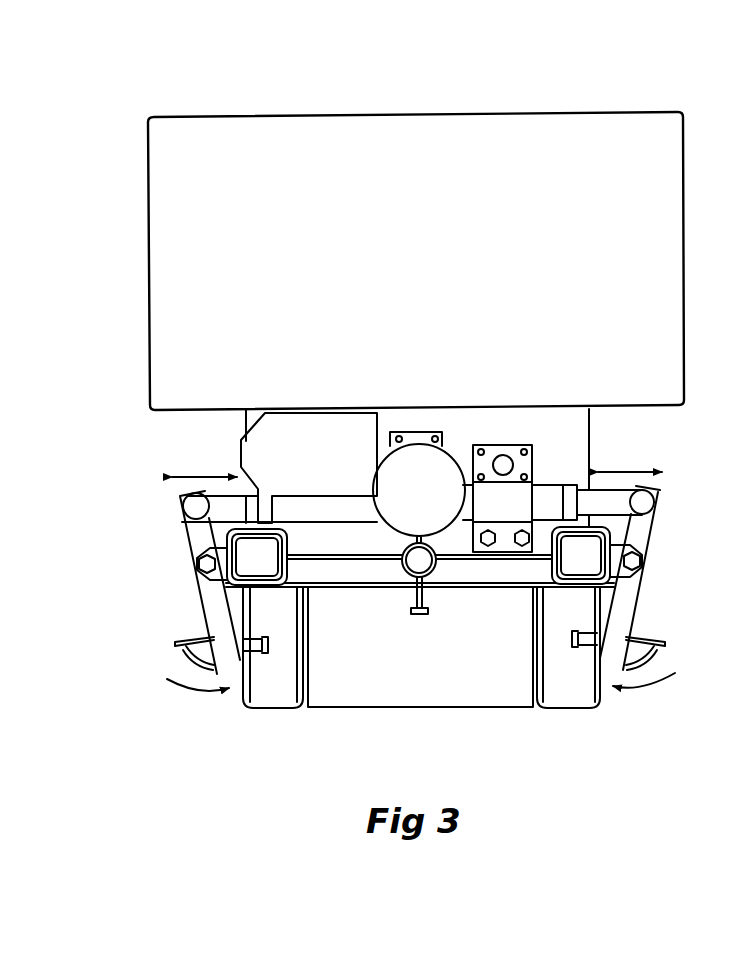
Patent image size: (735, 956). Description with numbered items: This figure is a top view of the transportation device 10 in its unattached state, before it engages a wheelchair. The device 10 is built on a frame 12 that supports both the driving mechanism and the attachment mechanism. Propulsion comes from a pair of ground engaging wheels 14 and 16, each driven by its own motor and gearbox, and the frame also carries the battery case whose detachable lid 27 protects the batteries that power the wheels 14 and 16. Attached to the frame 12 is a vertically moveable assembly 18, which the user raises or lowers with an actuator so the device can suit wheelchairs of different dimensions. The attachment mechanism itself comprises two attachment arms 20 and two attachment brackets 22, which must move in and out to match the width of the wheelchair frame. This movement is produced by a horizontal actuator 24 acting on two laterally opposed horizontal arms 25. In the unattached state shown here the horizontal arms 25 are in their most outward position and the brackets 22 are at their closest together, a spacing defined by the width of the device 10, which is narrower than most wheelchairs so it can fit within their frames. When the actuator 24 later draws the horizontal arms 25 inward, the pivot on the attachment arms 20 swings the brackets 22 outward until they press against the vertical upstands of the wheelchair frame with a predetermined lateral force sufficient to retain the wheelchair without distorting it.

The transportation device 10 is at (203, 78).
The detachable lid 27 is at (386, 286).
The horizontal actuator 24 is at (322, 476).
The horizontal arms 25 is at (185, 516).
The attachment arms 20 is at (198, 583).
The attachment brackets 22 is at (186, 652).
The vertically moveable assembly 18 is at (469, 587).
The ground engaging wheel 14 is at (275, 700).
The ground engaging wheel 16 is at (562, 695).
The frame 12 is at (422, 694).